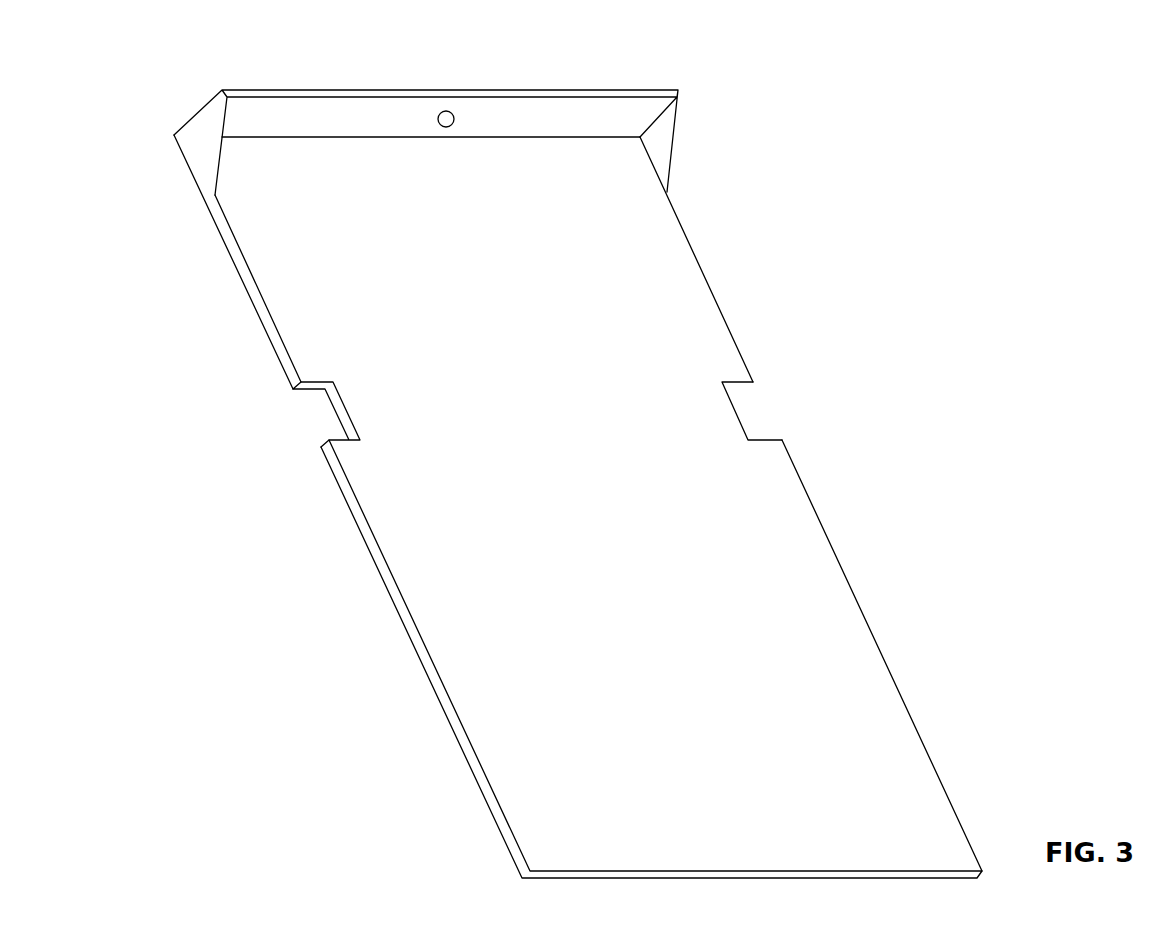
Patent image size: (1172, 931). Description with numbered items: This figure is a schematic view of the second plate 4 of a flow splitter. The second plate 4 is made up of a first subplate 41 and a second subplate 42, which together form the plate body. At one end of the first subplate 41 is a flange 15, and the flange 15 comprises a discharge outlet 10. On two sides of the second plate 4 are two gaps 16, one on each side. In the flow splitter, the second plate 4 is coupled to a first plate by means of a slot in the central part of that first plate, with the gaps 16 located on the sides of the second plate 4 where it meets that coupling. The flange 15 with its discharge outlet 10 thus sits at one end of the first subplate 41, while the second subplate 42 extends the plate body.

The second plate 4 is at (358, 527).
The discharge outlet 10 is at (446, 119).
The flange 15 is at (328, 89).
The gaps 16 is at (735, 412).
The first subplate 41 is at (685, 233).
The second subplate 42 is at (826, 538).